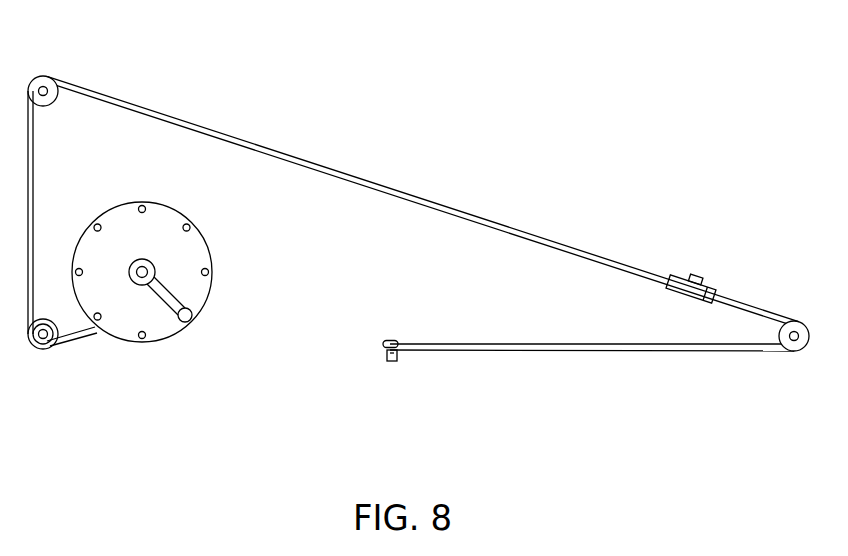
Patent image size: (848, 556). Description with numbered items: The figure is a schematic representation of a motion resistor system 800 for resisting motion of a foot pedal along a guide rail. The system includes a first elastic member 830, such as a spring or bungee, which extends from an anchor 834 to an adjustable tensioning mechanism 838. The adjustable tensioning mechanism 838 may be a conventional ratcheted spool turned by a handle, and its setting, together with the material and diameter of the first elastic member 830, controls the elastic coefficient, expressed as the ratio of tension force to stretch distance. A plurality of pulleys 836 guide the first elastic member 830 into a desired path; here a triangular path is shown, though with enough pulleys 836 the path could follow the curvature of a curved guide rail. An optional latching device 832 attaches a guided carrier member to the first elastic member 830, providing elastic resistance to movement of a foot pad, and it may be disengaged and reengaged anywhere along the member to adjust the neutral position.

The motion resistor system 800 is at (467, 131).
The first elastic member 830 is at (290, 155).
The latching device 832 is at (706, 290).
The anchor 834 is at (392, 362).
The pulleys 836 is at (46, 84).
The adjustable tensioning mechanism 838 is at (200, 252).